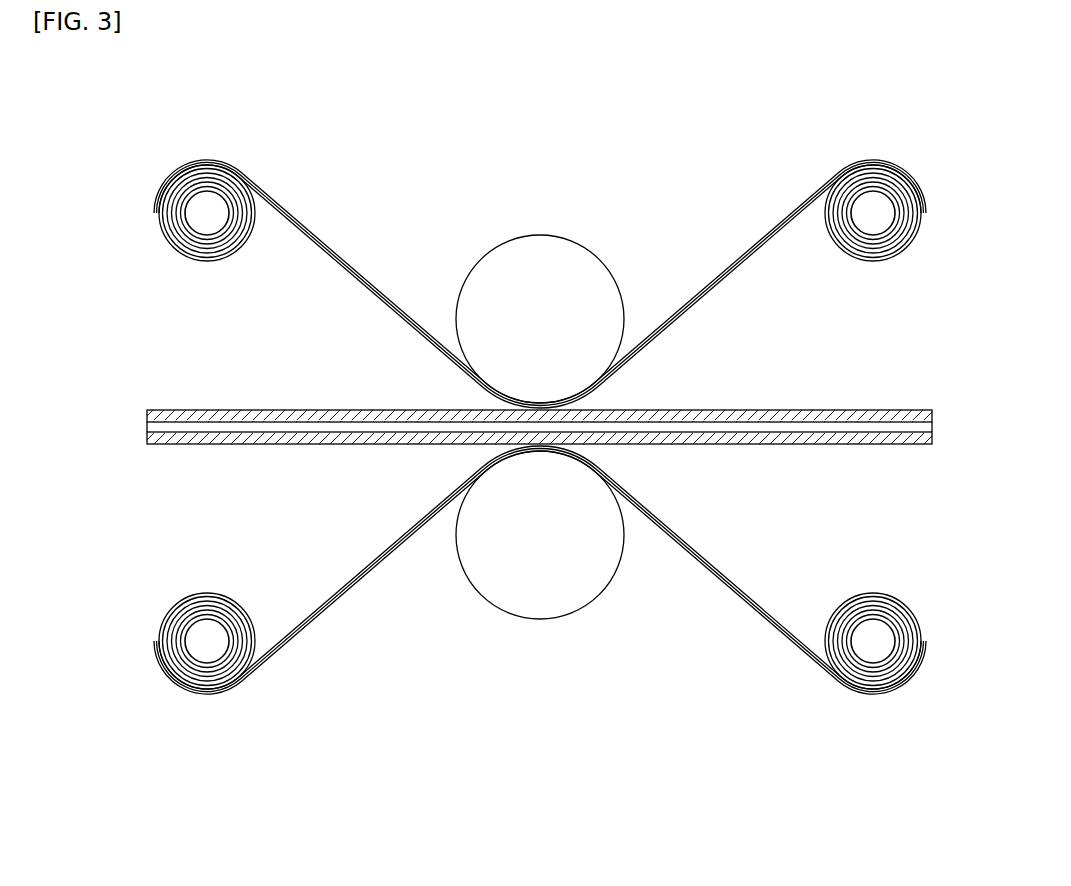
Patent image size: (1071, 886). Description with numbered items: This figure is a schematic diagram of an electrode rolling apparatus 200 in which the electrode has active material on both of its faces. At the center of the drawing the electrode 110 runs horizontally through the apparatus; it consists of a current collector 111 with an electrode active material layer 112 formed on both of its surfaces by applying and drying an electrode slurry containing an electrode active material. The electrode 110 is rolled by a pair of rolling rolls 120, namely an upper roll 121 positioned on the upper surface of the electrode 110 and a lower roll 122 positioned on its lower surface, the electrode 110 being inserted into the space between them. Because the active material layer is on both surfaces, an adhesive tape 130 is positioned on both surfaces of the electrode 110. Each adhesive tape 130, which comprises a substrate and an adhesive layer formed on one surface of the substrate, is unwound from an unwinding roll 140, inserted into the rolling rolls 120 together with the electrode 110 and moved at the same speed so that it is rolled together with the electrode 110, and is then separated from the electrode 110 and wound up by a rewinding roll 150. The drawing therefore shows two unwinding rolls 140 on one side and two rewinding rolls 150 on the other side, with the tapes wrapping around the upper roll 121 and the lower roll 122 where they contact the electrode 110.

The electrode rolling apparatus 200 is at (168, 120).
The electrode 110 is at (882, 536).
The current collector 111 is at (767, 428).
The electrode active material layer 112 is at (848, 420).
The rolling rolls 120 is at (542, 215).
The upper roll 121 is at (617, 283).
The lower roll 122 is at (603, 587).
The adhesive tape 130 is at (540, 429).
The unwinding roll 140 is at (208, 227).
The rewinding roll 150 is at (875, 218).